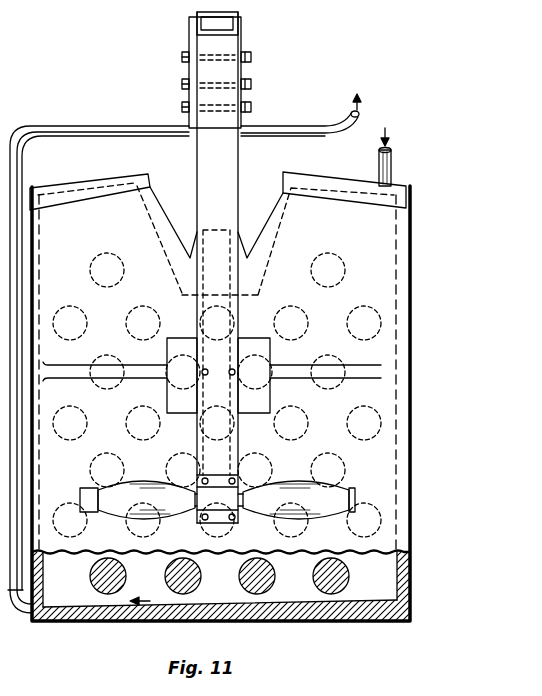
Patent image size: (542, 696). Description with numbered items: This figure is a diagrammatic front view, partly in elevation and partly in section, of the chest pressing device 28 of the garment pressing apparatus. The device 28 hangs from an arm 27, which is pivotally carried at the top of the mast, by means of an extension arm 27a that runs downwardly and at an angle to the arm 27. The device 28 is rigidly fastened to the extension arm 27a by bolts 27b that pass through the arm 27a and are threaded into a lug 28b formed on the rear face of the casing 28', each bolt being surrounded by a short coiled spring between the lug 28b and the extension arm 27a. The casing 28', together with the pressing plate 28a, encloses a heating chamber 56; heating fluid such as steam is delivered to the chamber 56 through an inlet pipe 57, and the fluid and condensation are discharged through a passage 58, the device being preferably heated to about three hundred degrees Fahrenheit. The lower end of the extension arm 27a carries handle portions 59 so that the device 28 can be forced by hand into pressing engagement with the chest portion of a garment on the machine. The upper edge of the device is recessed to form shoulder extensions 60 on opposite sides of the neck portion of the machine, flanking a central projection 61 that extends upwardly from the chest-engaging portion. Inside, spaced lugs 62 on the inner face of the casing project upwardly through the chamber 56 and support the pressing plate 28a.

The arm 27 is at (222, 27).
The extension arm 27a is at (232, 157).
The bolts 27b is at (214, 348).
The chest pressing device 28 is at (243, 403).
The pressing plate 28a is at (372, 265).
The lug 28b is at (251, 338).
The casing 28' is at (243, 605).
The heating chamber 56 is at (64, 598).
The inlet pipe 57 is at (393, 168).
The passage 58 is at (119, 128).
The handle portions 59 is at (352, 497).
The shoulder extensions 60 is at (75, 182).
The central projection 61 is at (194, 254).
The lugs 62 is at (384, 413).